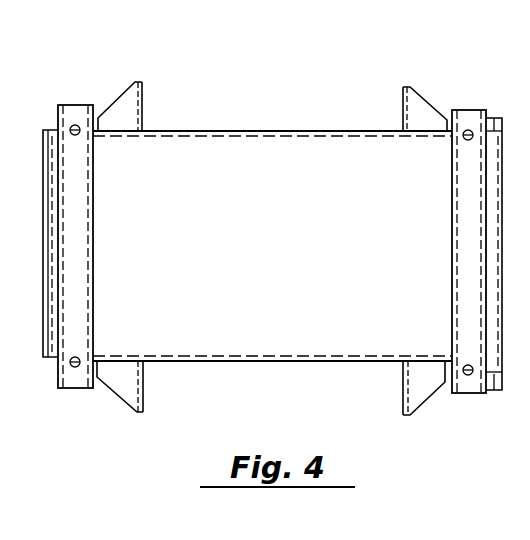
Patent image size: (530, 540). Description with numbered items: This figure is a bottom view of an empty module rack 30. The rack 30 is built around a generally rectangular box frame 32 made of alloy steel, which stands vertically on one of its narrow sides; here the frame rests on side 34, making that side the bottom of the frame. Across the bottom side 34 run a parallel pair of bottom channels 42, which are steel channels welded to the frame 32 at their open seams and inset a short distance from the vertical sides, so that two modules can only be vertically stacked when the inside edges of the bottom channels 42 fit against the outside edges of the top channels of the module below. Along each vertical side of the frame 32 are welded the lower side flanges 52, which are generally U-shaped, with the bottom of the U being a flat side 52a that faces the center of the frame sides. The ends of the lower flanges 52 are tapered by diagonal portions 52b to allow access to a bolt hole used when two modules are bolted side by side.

The module rack 30 is at (306, 102).
The box frame 32 is at (42, 147).
The bottom side 34 is at (336, 242).
The bottom channels 42 is at (94, 210).
The lower side flanges 52 is at (142, 82).
The flat side 52a is at (143, 116).
The diagonal portions 52b is at (118, 99).